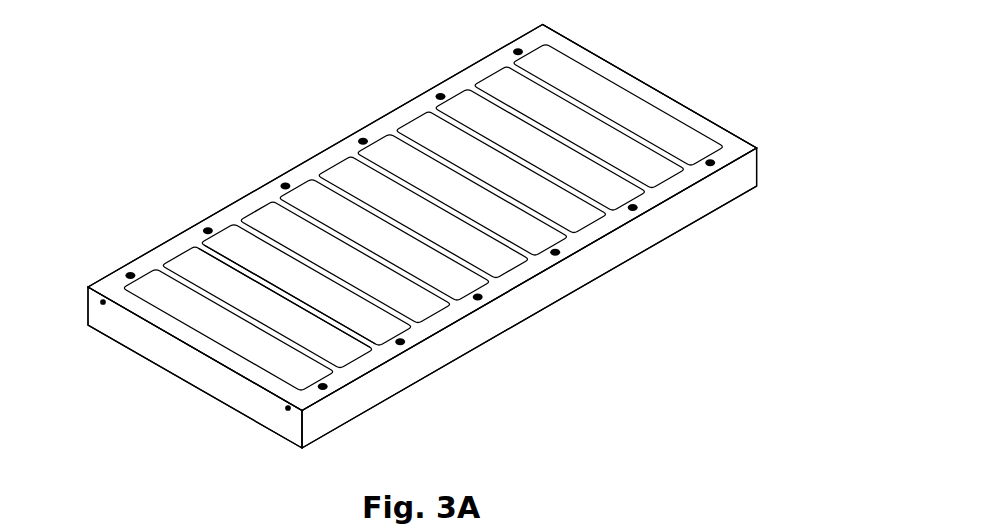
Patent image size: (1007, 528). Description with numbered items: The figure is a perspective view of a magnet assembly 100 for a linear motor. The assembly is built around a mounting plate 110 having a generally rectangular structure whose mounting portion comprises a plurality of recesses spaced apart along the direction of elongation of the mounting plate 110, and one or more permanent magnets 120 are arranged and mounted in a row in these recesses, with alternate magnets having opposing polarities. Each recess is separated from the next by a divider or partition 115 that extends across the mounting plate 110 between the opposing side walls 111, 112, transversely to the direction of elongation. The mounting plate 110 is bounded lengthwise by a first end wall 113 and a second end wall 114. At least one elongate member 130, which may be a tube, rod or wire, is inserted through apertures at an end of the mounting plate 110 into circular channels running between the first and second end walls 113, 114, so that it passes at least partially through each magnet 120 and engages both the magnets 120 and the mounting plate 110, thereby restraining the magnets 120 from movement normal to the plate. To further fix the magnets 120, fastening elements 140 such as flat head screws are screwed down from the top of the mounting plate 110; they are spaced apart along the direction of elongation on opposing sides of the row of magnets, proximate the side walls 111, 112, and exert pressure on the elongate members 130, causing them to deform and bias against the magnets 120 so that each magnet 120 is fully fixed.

The magnet assembly 100 is at (665, 67).
The mounting plate 110 is at (462, 333).
The side wall 111 is at (547, 292).
The side wall 112 is at (318, 163).
The first end wall 113 is at (176, 356).
The second end wall 114 is at (687, 107).
The partition 115 is at (282, 297).
The permanent magnet 120 is at (243, 248).
The elongate member 130 is at (103, 302).
The fastening element 140 is at (202, 228).